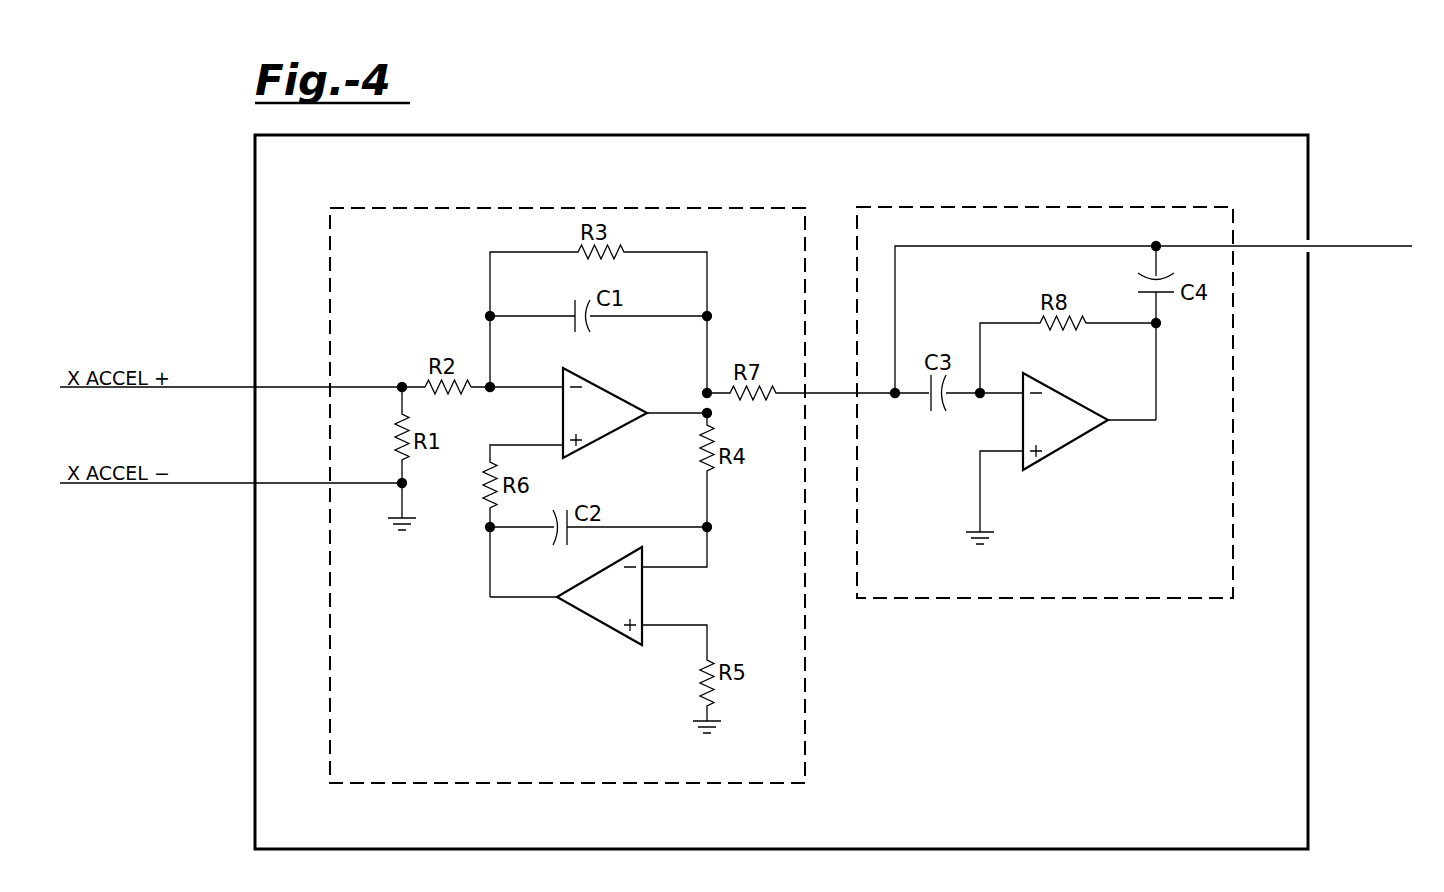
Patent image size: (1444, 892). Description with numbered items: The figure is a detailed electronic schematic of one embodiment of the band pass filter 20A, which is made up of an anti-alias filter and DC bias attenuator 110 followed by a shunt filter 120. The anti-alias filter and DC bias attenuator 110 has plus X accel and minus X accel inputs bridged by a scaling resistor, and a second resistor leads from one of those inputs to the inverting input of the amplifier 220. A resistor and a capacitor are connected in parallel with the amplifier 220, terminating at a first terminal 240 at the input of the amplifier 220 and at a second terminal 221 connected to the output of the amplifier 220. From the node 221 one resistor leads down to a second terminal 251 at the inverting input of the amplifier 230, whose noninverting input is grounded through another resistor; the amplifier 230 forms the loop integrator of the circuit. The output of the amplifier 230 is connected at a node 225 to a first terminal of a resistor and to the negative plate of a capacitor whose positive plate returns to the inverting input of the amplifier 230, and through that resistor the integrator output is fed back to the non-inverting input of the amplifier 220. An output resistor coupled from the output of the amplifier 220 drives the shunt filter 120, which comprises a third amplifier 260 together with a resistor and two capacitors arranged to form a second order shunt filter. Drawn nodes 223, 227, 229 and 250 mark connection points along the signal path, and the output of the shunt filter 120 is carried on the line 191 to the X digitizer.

The band pass filter 20A is at (550, 135).
The anti-alias filter and DC bias attenuator 110 is at (412, 208).
The shunt filter 120 is at (886, 207).
The line 191 is at (1348, 246).
The amplifier 220 is at (598, 385).
The second terminal (node) 221 is at (703, 416).
The input node of second stage 223 is at (896, 392).
The node 225 is at (488, 529).
The output node 227 is at (1156, 246).
The feedback node 229 is at (1159, 326).
The amplifier 230 is at (600, 625).
The first terminal 240 is at (490, 387).
The node 250 is at (708, 390).
The second terminal of resistor R4 251 is at (712, 530).
The third amplifier 260 is at (1065, 452).